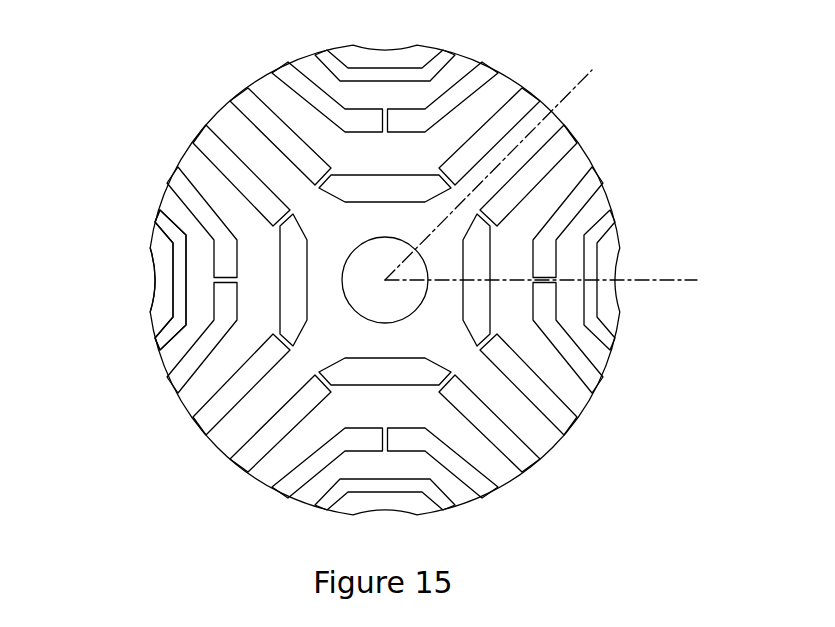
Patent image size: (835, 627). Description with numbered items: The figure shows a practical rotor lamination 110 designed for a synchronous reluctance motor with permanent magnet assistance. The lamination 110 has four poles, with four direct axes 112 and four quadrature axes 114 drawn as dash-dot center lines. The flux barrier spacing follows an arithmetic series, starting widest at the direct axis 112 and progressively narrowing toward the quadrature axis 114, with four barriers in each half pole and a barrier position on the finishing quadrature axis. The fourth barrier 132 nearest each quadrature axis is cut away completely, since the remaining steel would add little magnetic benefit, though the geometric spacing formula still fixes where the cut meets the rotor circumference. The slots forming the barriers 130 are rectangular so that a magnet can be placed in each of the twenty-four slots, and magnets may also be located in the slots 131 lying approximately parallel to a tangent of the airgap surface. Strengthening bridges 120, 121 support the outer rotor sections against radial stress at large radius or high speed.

The rotor lamination 110 is at (447, 340).
The direct axis 112 is at (578, 83).
The quadrature axis 114 is at (658, 280).
The strengthening bridge 120 is at (157, 335).
The strengthening bridge 121 is at (277, 343).
The barrier slots 130 is at (165, 230).
The slots 131 is at (293, 259).
The fourth barrier 132 is at (143, 282).